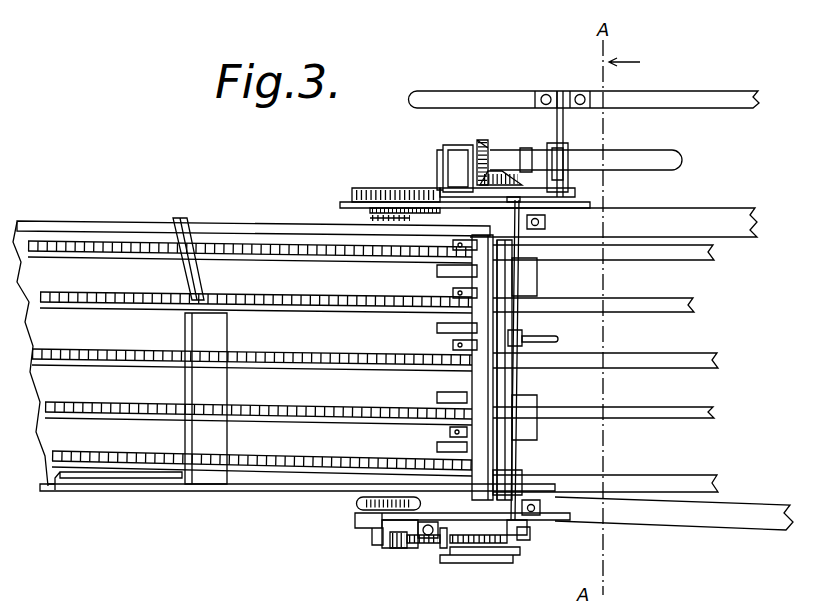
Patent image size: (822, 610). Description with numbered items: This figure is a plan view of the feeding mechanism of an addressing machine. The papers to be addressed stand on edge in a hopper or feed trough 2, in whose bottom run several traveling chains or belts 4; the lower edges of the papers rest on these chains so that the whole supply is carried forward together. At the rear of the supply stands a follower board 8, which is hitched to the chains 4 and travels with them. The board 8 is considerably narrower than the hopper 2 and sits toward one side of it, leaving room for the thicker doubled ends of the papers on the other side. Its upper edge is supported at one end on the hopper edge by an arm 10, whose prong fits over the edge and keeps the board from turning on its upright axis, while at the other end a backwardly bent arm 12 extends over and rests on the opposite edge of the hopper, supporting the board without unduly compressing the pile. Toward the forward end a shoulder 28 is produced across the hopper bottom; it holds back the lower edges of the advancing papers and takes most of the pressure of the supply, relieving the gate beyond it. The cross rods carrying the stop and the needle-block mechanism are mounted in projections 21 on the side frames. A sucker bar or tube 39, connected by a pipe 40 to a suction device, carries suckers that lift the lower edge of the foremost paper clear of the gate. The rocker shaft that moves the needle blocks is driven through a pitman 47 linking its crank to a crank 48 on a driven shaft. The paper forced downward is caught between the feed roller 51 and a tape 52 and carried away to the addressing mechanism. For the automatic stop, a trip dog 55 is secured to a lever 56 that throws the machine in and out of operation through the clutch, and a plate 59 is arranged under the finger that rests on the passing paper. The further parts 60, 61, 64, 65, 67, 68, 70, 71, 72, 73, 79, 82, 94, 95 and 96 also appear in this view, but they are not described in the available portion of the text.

The hopper or feed trough 2 is at (257, 216).
The traveling chains or belts 4 is at (128, 308).
The follower board 8 is at (201, 466).
The arm 10 is at (135, 478).
The arm 12 is at (204, 297).
The projections 21 is at (738, 220).
The shoulder 28 is at (390, 478).
The sucker bar or tube 39 is at (457, 384).
The pipe 40 is at (378, 506).
The pitman 47 is at (480, 556).
The crank 48 is at (637, 553).
The feed roller 51 is at (503, 275).
The tape 52 is at (735, 312).
The trip dog 55 is at (563, 91).
The lever 56 is at (688, 104).
The plate 59 is at (590, 320).
The pin 60 is at (549, 345).
The collar 61 is at (521, 336).
The frame bar 64 is at (527, 309).
The stop block 65 is at (515, 535).
The collar 67 is at (533, 163).
The mounting plate 68 is at (560, 193).
The drive shaft 70 is at (660, 160).
The bearing 71 is at (575, 152).
The bevel gear housing 72 is at (480, 150).
The bevel gear 73 is at (497, 170).
The rack bar 79 is at (355, 213).
The chain clip 82 is at (450, 431).
The bracket 94 is at (400, 523).
The worm 95 is at (394, 550).
The rack segment 96 is at (438, 546).